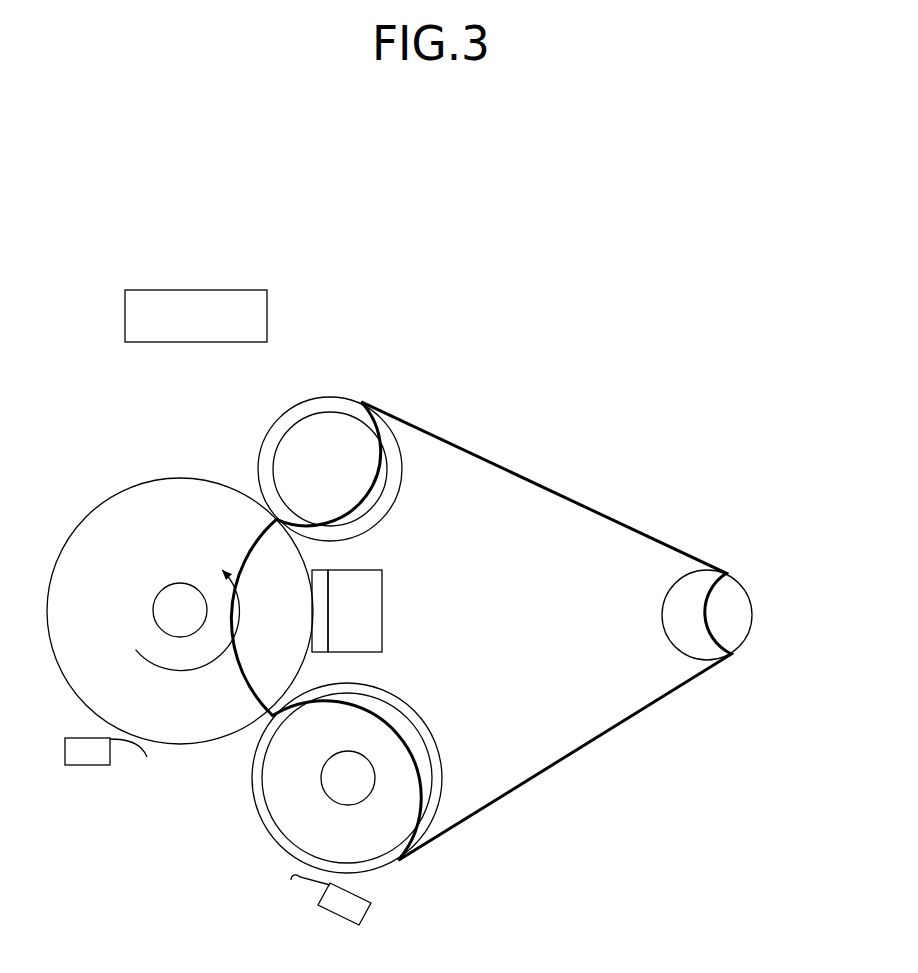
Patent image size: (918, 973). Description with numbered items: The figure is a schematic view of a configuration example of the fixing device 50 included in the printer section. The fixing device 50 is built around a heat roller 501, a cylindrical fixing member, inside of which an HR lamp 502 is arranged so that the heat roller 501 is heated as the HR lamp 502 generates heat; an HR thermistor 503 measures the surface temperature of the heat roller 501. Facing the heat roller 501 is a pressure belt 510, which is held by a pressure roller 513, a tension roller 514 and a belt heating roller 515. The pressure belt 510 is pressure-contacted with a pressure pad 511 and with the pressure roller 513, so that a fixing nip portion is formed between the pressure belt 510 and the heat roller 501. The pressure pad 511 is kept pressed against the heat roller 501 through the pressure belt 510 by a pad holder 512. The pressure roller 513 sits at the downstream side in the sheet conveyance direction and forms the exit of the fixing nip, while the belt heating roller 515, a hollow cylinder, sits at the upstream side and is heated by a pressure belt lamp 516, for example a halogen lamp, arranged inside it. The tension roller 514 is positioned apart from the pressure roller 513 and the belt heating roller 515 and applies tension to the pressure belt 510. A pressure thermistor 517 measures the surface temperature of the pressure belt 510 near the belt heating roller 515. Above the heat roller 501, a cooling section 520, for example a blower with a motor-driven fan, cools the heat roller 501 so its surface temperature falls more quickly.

The fixing device 50 is at (598, 317).
The heat roller 501 is at (138, 523).
The HR lamp 502 is at (177, 593).
The HR thermistor 503 is at (85, 758).
The pressure belt 510 is at (552, 489).
The pressure pad 511 is at (318, 577).
The pad holder 512 is at (368, 607).
The pressure roller 513 is at (323, 433).
The tension roller 514 is at (693, 614).
The belt heating roller 515 is at (413, 782).
The pressure belt lamp 516 is at (347, 775).
The pressure thermistor 517 is at (337, 907).
The cooling section 520 is at (200, 288).